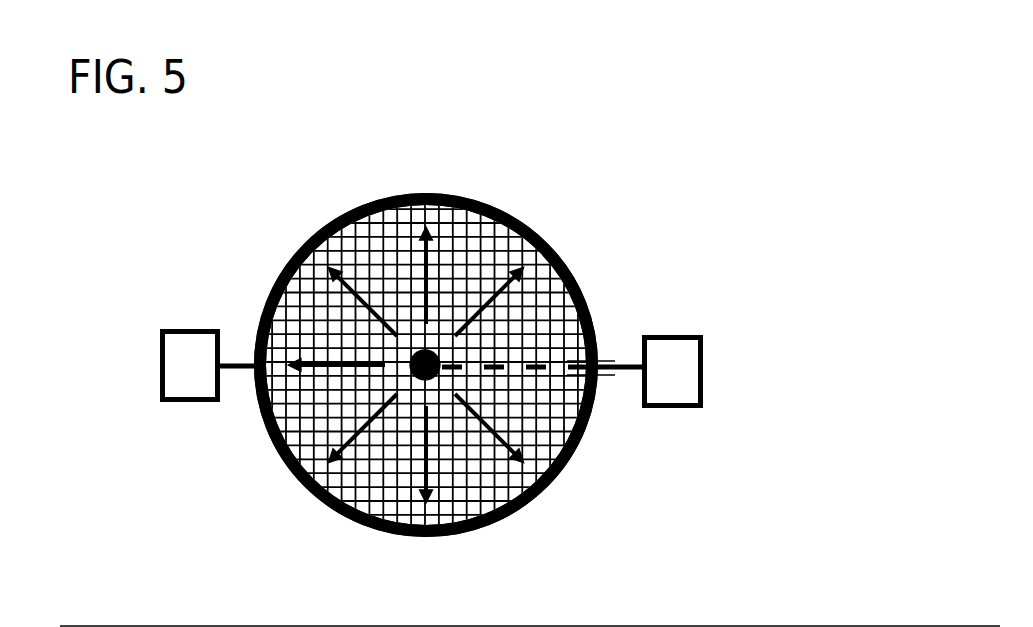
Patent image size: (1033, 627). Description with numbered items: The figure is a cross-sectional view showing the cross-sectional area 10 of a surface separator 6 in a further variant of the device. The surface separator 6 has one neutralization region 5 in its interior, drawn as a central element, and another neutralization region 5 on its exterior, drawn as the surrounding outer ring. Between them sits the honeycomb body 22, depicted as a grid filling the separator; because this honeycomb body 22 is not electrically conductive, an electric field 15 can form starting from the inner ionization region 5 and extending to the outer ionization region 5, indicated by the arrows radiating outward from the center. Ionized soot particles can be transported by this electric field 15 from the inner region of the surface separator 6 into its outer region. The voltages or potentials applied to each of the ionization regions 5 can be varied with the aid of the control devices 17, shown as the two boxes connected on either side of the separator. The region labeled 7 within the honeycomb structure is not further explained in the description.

The neutralization region 5 is at (413, 351).
The surface separator 6 is at (595, 225).
The grid region 7 is at (426, 338).
The cross-sectional area 10 is at (557, 418).
The electric field 15 is at (428, 462).
The control devices 17 is at (160, 332).
The honeycomb body 22 is at (472, 235).